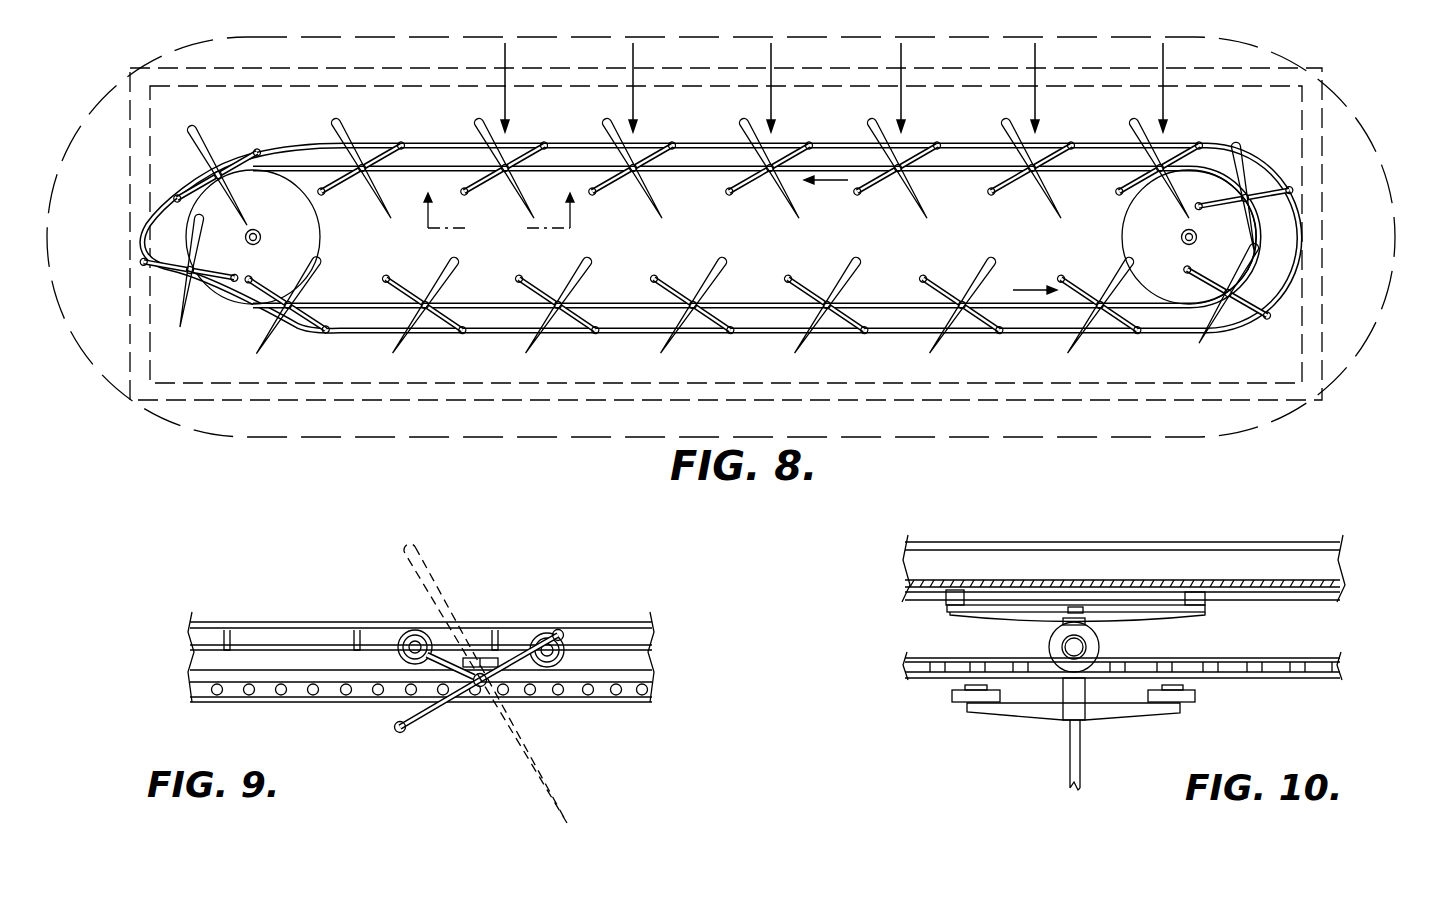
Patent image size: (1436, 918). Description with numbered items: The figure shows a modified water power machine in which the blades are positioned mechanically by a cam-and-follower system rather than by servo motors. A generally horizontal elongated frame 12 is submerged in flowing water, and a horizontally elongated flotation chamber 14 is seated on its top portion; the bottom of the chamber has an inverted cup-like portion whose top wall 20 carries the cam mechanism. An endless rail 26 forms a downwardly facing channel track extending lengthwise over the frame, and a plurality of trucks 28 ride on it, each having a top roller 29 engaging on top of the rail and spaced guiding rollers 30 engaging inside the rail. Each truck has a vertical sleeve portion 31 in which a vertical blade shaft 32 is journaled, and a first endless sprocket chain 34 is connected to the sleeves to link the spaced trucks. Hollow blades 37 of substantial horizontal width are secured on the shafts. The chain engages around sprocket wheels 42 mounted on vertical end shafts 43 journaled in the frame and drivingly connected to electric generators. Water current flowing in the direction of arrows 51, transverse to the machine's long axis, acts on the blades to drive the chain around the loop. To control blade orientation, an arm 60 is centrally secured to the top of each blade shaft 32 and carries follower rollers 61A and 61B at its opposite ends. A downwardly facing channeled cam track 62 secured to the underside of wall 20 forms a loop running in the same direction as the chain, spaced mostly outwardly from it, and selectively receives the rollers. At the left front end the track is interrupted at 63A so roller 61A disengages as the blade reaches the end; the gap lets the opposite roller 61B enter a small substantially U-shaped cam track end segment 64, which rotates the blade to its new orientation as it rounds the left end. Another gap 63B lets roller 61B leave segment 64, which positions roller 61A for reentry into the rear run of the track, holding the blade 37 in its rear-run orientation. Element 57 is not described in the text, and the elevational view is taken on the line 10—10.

In FIG. 8, the section line 10 is at (508, 223).
In FIG. 8, the frame 12 is at (125, 318).
In FIG. 8, the flotation chamber 14 is at (1380, 153).
In FIG. 10, the top wall 20 is at (1129, 586).
In FIG. 9, the endless rail 26 is at (628, 662).
In FIG. 10, the truck 28 is at (1063, 723).
In FIG. 9, the top roller 29 is at (471, 623).
In FIG. 10, the top roller 29 is at (1088, 642).
In FIG. 9, the guiding roller 30 is at (399, 654).
In FIG. 10, the guiding roller 30 is at (952, 700).
In FIG. 10, the vertical sleeve portion 31 is at (1086, 697).
In FIG. 10, the blade shaft 32 is at (1082, 760).
In FIG. 8, the endless sprocket chain 34 is at (695, 173).
In FIG. 9, the endless sprocket chain 34 is at (573, 695).
In FIG. 10, the endless sprocket chain 34 is at (1237, 658).
In FIG. 8, the blade 37 is at (349, 131).
In FIG. 9, the blade 37 is at (447, 572).
In FIG. 8, the sprocket wheel 42 is at (320, 228).
In FIG. 8, the end shaft 43 is at (262, 237).
In FIG. 8, the arrows 51 is at (900, 103).
In FIG. 8, the paddle 57 is at (201, 252).
In FIG. 8, the arm 60 is at (330, 158).
In FIG. 10, the arm 60 is at (1037, 621).
In FIG. 8, the follower roller 61A is at (253, 150).
In FIG. 9, the follower roller 61A is at (563, 632).
In FIG. 10, the follower roller 61A is at (1204, 595).
In FIG. 8, the follower roller 61B is at (183, 194).
In FIG. 9, the follower roller 61B is at (400, 732).
In FIG. 10, the follower roller 61B is at (957, 593).
In FIG. 8, the cam track 62 is at (965, 142).
In FIG. 9, the cam track 62 is at (527, 623).
In FIG. 10, the cam track 62 is at (1282, 603).
In FIG. 8, the cam track interruption 63A is at (225, 152).
In FIG. 8, the gap 63B is at (247, 312).
In FIG. 8, the cam track end segment 64 is at (143, 226).